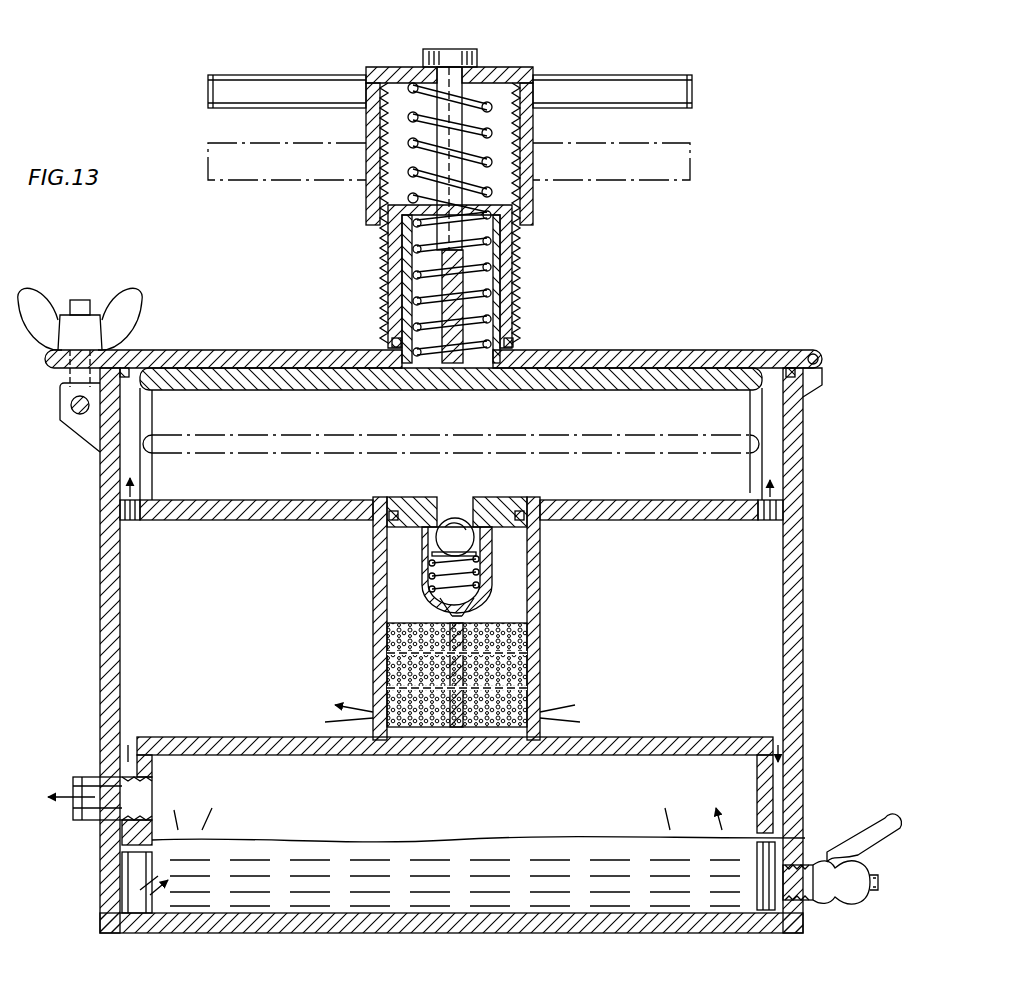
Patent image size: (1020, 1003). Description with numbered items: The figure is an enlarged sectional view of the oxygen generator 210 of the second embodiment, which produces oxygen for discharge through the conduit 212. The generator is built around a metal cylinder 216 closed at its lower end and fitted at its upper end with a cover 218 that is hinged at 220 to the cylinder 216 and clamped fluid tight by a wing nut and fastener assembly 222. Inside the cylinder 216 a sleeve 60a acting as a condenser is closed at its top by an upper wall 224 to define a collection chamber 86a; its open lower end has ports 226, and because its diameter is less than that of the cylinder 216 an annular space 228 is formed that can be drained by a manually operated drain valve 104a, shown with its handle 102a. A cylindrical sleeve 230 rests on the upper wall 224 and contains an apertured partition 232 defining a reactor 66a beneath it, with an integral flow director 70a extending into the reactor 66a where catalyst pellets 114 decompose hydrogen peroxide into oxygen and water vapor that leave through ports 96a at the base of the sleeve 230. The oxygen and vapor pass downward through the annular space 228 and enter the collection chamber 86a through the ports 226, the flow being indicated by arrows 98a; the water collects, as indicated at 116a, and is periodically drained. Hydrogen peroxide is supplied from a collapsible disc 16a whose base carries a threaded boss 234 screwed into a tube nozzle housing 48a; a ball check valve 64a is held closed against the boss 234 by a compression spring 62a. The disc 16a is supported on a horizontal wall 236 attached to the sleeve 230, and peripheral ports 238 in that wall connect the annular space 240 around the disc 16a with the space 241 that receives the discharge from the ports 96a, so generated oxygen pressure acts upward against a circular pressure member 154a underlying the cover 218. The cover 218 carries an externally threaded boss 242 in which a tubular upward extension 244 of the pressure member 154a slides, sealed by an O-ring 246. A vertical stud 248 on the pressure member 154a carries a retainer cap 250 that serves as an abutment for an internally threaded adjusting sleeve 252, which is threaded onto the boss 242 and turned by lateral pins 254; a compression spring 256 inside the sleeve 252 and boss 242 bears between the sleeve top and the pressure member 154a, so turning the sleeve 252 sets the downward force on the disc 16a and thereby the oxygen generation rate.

The collapsible disc 16a is at (588, 396).
The tube nozzle housing 48a is at (515, 540).
The sleeve 60a is at (165, 826).
The compression spring 62a is at (432, 573).
The ball check valve 64a is at (440, 541).
The reactor 66a is at (530, 651).
The flow director 70a is at (530, 687).
The collection chamber 86a is at (598, 810).
The ports 96a is at (477, 710).
The return flow arrows 98a is at (132, 885).
The drain valve handle 102a is at (815, 866).
The drain valve 104a is at (873, 883).
The catalyst pellets 114 is at (395, 653).
The collected water 116a is at (326, 844).
The circular pressure member 154a is at (603, 368).
The oxygen generator 210 is at (96, 592).
The conduit 212 is at (88, 826).
The metal cylinder 216 is at (800, 538).
The cover 218 is at (244, 351).
The hinge 220 is at (818, 352).
The wing nut and fastener assembly 222 is at (134, 299).
The upper wall 224 is at (233, 745).
The ports 226 is at (135, 900).
The annular space 228 is at (778, 795).
The cylindrical sleeve 230 is at (375, 605).
The apertured partition 232 is at (516, 621).
The threaded boss 234 is at (438, 518).
The horizontal wall 236 is at (260, 522).
The peripheral ports 238 is at (145, 520).
The annular space 240 is at (118, 478).
The space 241 is at (241, 634).
The externally threaded boss 242 is at (510, 256).
The tubular upward extension 244 is at (497, 319).
The O-ring 246 is at (390, 344).
The vertical stud 248 is at (462, 95).
The retainer cap 250 is at (455, 48).
The internally threaded adjusting sleeve 252 is at (535, 72).
The lateral pins 254 is at (279, 82).
The compression spring 256 is at (413, 83).